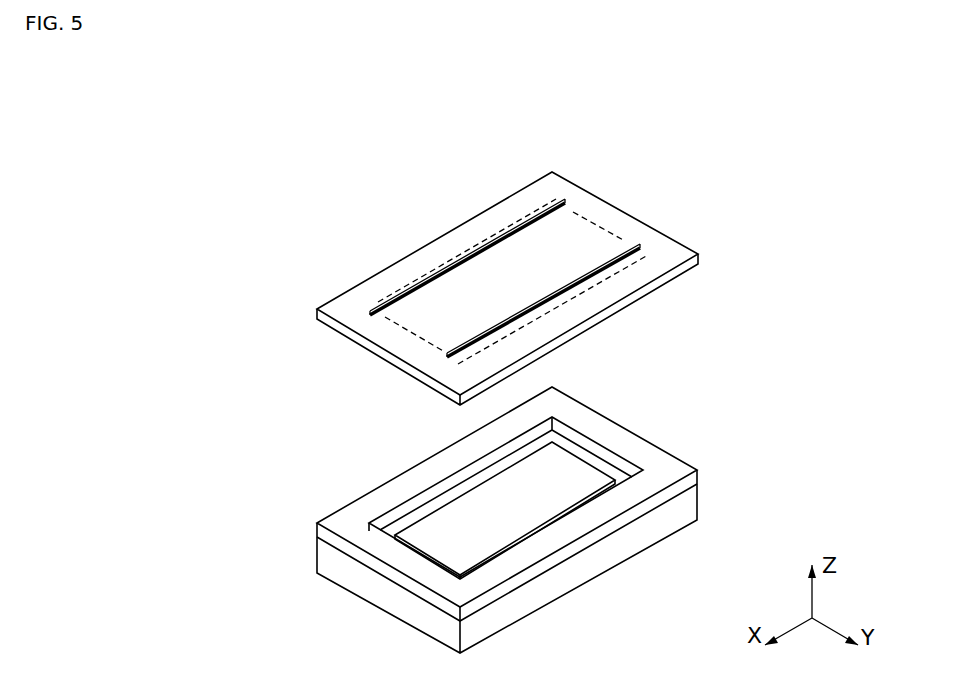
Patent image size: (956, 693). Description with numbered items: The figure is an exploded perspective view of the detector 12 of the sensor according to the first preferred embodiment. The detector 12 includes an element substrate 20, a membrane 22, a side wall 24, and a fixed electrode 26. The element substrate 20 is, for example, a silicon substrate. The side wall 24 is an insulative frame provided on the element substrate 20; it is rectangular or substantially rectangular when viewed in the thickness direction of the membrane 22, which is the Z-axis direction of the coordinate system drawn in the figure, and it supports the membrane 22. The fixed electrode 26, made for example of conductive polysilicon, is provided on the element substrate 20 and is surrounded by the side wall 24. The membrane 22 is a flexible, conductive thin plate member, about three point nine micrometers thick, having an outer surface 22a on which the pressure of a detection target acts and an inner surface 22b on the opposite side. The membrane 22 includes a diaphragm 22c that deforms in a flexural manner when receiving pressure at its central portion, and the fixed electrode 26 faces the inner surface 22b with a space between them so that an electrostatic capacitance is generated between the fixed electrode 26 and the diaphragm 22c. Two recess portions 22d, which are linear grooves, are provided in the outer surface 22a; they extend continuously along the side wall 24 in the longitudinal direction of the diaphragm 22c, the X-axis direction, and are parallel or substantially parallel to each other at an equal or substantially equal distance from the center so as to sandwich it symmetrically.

The detector 12 is at (230, 292).
The element substrate 20 is at (385, 598).
The membrane 22 is at (353, 329).
The outer surface 22a is at (457, 233).
The inner surface 22b is at (657, 266).
The diaphragm 22c is at (590, 222).
The recess portions 22d is at (422, 280).
The side wall 24 is at (347, 515).
The fixed electrode 26 is at (510, 507).